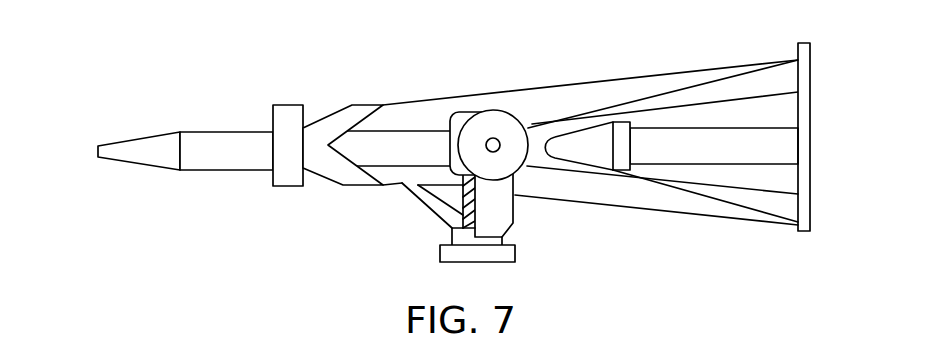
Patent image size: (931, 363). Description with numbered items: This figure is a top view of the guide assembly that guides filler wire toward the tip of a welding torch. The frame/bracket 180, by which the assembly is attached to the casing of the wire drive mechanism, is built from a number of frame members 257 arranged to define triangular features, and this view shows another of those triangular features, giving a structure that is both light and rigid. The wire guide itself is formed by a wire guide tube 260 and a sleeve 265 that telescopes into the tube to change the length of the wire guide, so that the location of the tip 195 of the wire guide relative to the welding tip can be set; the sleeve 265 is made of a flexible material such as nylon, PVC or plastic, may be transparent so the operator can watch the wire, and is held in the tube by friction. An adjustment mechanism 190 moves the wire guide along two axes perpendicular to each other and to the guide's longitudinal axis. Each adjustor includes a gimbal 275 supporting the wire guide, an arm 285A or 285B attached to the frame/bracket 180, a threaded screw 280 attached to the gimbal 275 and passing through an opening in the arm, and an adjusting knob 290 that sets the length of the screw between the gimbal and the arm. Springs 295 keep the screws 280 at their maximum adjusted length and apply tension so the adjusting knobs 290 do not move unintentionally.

The frame/bracket 180 is at (611, 72).
The adjustment mechanism 190 is at (544, 224).
The tip 195 is at (143, 138).
The frame members 257 is at (713, 84).
The wire guide tube 260 is at (234, 131).
The sleeve 265 is at (710, 165).
The gimbal 275 is at (466, 110).
The threaded screw 280 is at (462, 217).
The arm 285A is at (404, 187).
The arm 285B is at (515, 226).
The adjusting knob 290 is at (498, 110).
The springs 295 is at (452, 229).